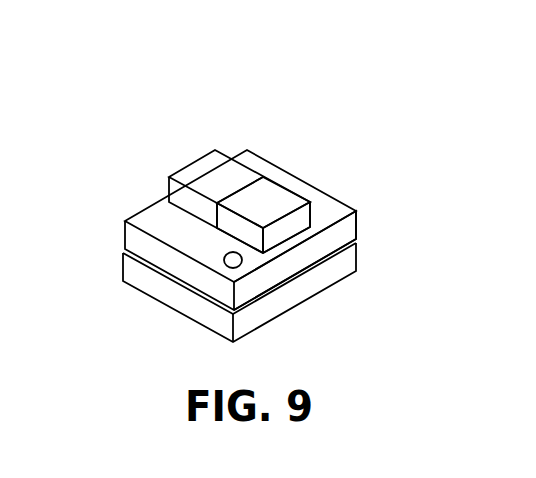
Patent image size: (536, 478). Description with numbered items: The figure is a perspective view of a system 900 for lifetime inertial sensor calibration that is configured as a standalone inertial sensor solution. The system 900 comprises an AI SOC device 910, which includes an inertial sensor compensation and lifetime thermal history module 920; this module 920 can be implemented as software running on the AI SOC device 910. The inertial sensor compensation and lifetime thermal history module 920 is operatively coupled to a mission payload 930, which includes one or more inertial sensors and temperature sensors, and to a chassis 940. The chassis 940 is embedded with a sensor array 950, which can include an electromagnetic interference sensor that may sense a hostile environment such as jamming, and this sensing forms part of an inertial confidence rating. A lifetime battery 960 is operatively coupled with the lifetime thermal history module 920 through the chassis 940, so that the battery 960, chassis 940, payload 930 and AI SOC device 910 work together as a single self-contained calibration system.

The system for lifetime inertial sensor calibration 900 is at (185, 95).
The AI SOC device 910 is at (138, 213).
The inertial sensor compensation and lifetime thermal history module 920 is at (270, 192).
The mission payload 930 is at (183, 166).
The chassis 940 is at (347, 229).
The sensor array 950 is at (243, 262).
The lifetime battery 960 is at (152, 300).